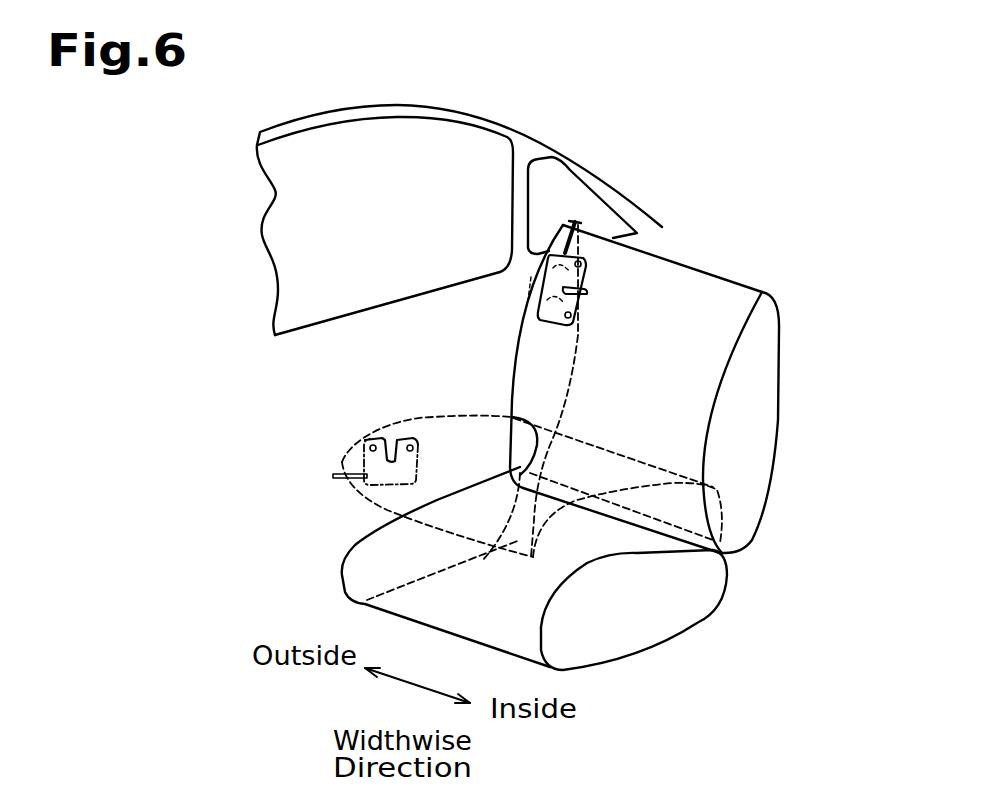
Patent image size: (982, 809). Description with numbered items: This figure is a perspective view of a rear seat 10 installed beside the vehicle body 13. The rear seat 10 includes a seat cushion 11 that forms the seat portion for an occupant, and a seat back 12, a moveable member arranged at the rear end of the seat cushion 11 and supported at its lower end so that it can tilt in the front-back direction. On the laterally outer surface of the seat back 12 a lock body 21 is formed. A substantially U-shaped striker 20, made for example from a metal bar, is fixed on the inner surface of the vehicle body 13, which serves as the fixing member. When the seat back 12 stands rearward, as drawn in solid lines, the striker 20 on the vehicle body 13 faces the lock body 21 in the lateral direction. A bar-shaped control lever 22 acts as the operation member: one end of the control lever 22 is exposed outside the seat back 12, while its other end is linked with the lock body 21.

The rear seat 10 is at (807, 506).
The seat cushion 11 is at (734, 574).
The seat back 12 is at (467, 410).
The vehicle body 13 is at (499, 283).
The striker 20 is at (586, 292).
The lock body 21 is at (545, 293).
The control lever 22 is at (575, 221).